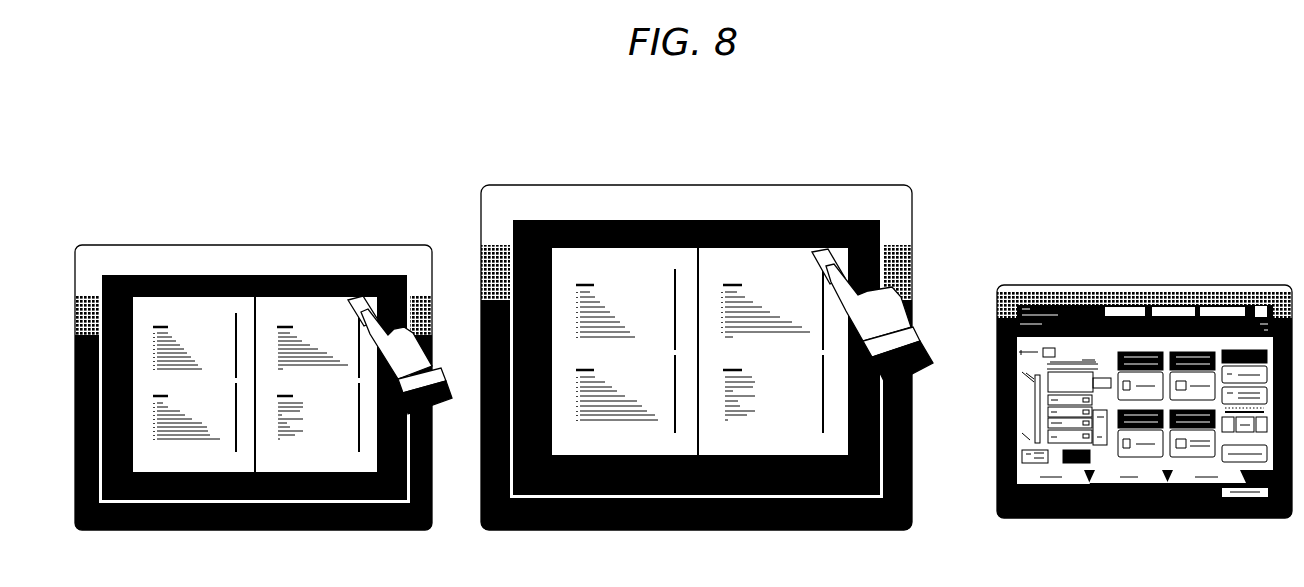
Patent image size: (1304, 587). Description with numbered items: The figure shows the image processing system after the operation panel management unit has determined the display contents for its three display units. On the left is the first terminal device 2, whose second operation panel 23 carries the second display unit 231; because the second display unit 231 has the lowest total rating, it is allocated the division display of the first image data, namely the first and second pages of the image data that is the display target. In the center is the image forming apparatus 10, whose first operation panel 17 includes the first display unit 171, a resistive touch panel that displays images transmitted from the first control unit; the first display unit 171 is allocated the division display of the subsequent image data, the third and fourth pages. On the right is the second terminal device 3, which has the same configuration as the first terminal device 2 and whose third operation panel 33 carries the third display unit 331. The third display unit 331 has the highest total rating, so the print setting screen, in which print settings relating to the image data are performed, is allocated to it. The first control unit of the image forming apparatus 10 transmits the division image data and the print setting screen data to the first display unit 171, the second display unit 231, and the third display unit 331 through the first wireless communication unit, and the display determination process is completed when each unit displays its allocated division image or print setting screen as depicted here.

The first terminal device 2 is at (197, 246).
The second operation panel 23 is at (393, 245).
The second display unit 231 is at (312, 276).
The image forming apparatus 10 is at (704, 185).
The first operation panel 17 is at (848, 185).
The first display unit 171 is at (768, 220).
The second terminal device 3 is at (1099, 286).
The third operation panel 33 is at (1222, 285).
The third display unit 331 is at (1142, 305).